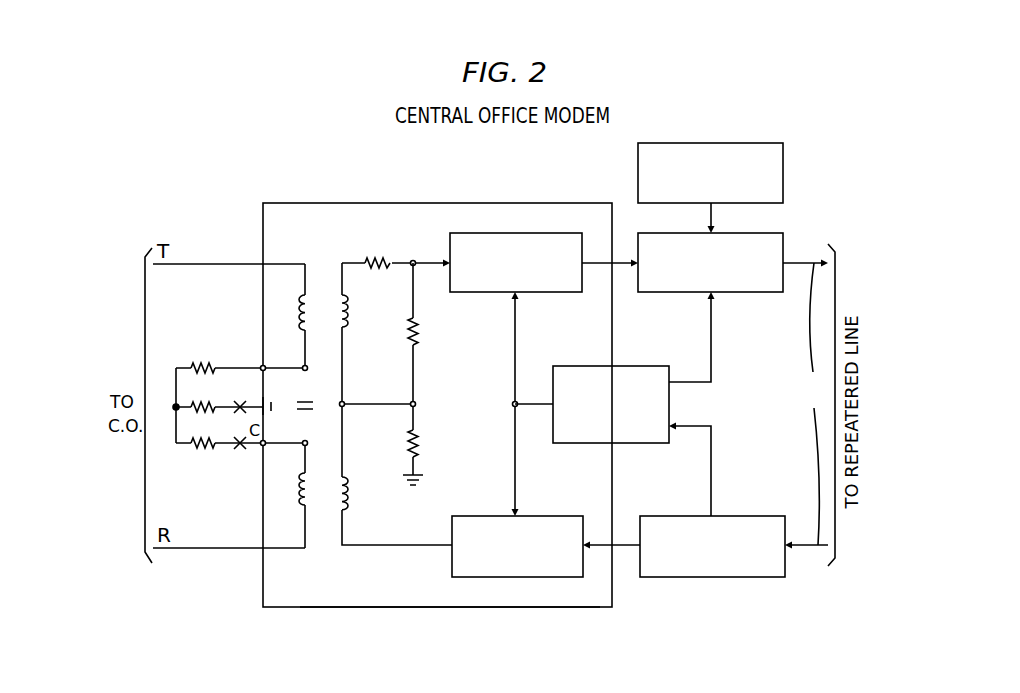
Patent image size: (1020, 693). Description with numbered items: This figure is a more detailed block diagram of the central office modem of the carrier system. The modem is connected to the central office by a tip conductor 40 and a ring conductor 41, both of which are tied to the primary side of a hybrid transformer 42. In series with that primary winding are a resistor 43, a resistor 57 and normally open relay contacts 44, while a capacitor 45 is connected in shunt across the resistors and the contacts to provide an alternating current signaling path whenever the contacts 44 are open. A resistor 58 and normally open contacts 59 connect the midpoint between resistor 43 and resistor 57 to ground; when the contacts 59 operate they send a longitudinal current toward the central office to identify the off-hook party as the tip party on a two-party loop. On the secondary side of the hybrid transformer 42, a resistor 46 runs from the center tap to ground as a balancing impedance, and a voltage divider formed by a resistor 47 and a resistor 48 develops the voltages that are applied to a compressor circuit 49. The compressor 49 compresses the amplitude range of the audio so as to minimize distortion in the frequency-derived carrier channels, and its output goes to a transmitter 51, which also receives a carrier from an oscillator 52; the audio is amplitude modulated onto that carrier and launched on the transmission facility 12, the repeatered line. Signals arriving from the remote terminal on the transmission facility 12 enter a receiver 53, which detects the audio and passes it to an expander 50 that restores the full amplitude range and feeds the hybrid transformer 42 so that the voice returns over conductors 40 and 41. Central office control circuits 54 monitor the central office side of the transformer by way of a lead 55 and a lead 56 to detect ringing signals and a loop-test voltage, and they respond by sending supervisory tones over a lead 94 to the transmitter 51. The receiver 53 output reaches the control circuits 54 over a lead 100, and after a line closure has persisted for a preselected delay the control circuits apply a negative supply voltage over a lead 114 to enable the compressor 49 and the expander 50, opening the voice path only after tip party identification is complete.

The transmission facility 12 is at (819, 404).
The tip conductor 40 is at (203, 263).
The ring conductor 41 is at (200, 549).
The hybrid transformer 42 is at (334, 242).
The resistor 43 is at (205, 367).
The normally open relay contacts 44 is at (242, 449).
The capacitor 45 is at (310, 400).
The resistor 46 is at (419, 447).
The resistor 47 is at (380, 258).
The resistor 48 is at (419, 336).
The compressor circuit 49 is at (501, 233).
The expander 50 is at (557, 516).
The transmitter 51 is at (767, 292).
The oscillator 52 is at (783, 170).
The receiver 53 is at (742, 516).
The central office control circuits 54 is at (625, 366).
The lead 55 is at (368, 607).
The lead 56 is at (430, 203).
The resistor 57 is at (205, 450).
The resistor 58 is at (192, 408).
The normally open contacts 59 is at (240, 397).
The lead 94 is at (711, 376).
The lead 100 is at (711, 476).
The lead 114 is at (535, 400).